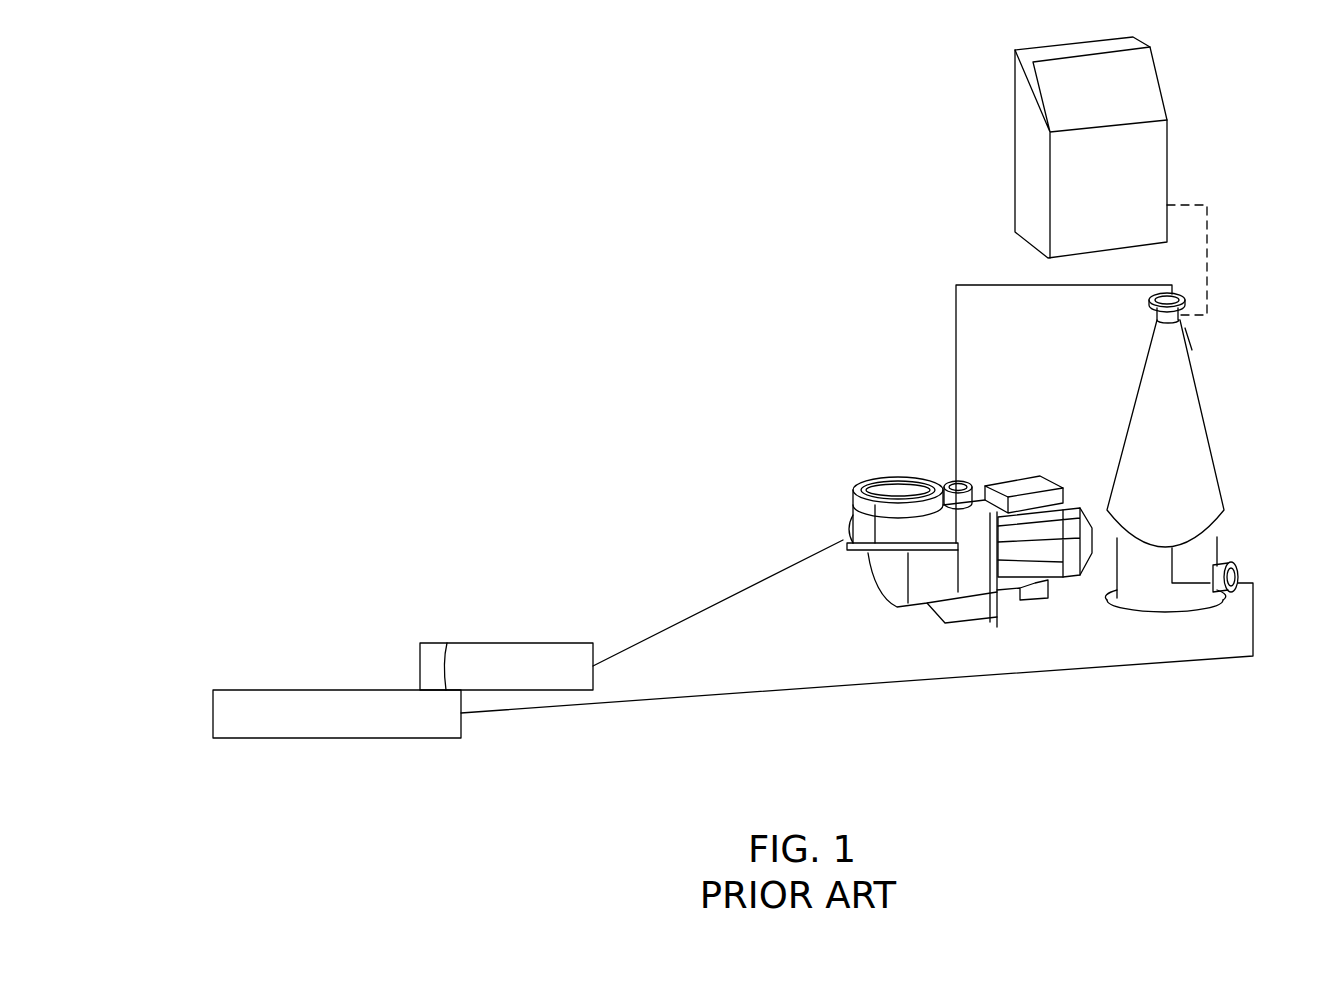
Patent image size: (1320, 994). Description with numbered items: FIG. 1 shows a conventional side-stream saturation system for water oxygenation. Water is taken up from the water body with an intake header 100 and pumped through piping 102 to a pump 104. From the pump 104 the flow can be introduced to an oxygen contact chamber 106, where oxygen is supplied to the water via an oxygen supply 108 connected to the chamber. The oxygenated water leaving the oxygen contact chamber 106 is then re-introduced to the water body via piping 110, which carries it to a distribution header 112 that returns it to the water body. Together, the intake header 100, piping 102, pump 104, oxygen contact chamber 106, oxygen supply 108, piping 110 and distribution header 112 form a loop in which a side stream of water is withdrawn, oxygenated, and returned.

The intake header 100 is at (508, 643).
The piping 102 is at (693, 612).
The pump 104 is at (905, 478).
The oxygen contact chamber 106 is at (1190, 334).
The oxygen supply 108 is at (1153, 143).
The piping 110 is at (815, 688).
The distribution header 112 is at (343, 690).